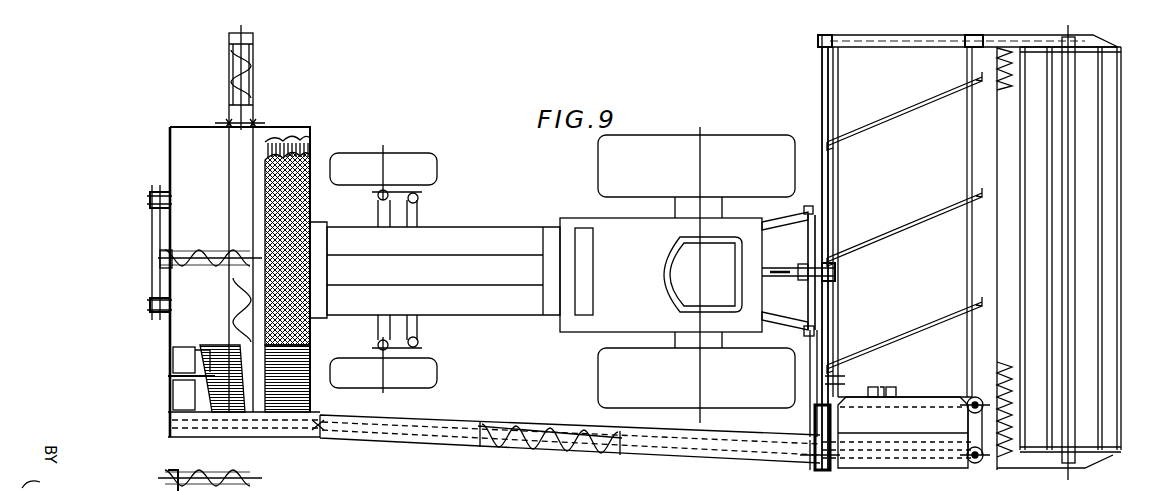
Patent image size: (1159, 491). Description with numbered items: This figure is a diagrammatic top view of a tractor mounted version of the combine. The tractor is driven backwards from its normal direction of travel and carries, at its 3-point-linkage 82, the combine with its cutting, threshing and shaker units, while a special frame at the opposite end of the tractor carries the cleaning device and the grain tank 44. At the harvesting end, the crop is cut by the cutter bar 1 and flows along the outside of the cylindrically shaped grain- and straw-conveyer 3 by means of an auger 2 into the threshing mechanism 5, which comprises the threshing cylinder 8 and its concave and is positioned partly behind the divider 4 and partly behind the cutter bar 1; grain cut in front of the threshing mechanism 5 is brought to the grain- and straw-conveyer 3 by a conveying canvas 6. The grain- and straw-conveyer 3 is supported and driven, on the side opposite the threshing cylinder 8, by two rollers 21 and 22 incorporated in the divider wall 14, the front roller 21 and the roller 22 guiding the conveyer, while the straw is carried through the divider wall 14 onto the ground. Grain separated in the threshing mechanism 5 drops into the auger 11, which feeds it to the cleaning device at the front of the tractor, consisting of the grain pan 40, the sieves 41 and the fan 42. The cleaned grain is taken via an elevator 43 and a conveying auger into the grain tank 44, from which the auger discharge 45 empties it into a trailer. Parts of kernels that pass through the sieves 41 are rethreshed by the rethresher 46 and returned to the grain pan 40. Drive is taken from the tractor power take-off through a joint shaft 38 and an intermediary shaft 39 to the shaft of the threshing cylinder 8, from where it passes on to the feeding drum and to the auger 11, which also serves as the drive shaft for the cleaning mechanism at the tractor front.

The cutter bar 1 is at (1000, 372).
The auger 2 is at (973, 194).
The grain- and straw-conveyer 3 is at (958, 113).
The divider 4 is at (1038, 463).
The threshing mechanism 5 is at (900, 423).
The conveying canvas 6 is at (974, 398).
The threshing cylinder 8 is at (812, 414).
The auger 11 is at (478, 428).
The divider wall 14 is at (1033, 40).
The front roller 21 is at (963, 47).
The roller 22 is at (818, 45).
The joint shaft 38 is at (777, 271).
The intermediary shaft 39 is at (805, 280).
The grain pan 40 is at (305, 388).
The sieves 41 is at (308, 163).
The fan 42 is at (180, 404).
The elevator 43 is at (176, 263).
The grain tank 44 is at (195, 135).
The auger discharge 45 is at (252, 78).
The rethresher 46 is at (165, 184).
The 3-point-linkage 82 is at (788, 215).